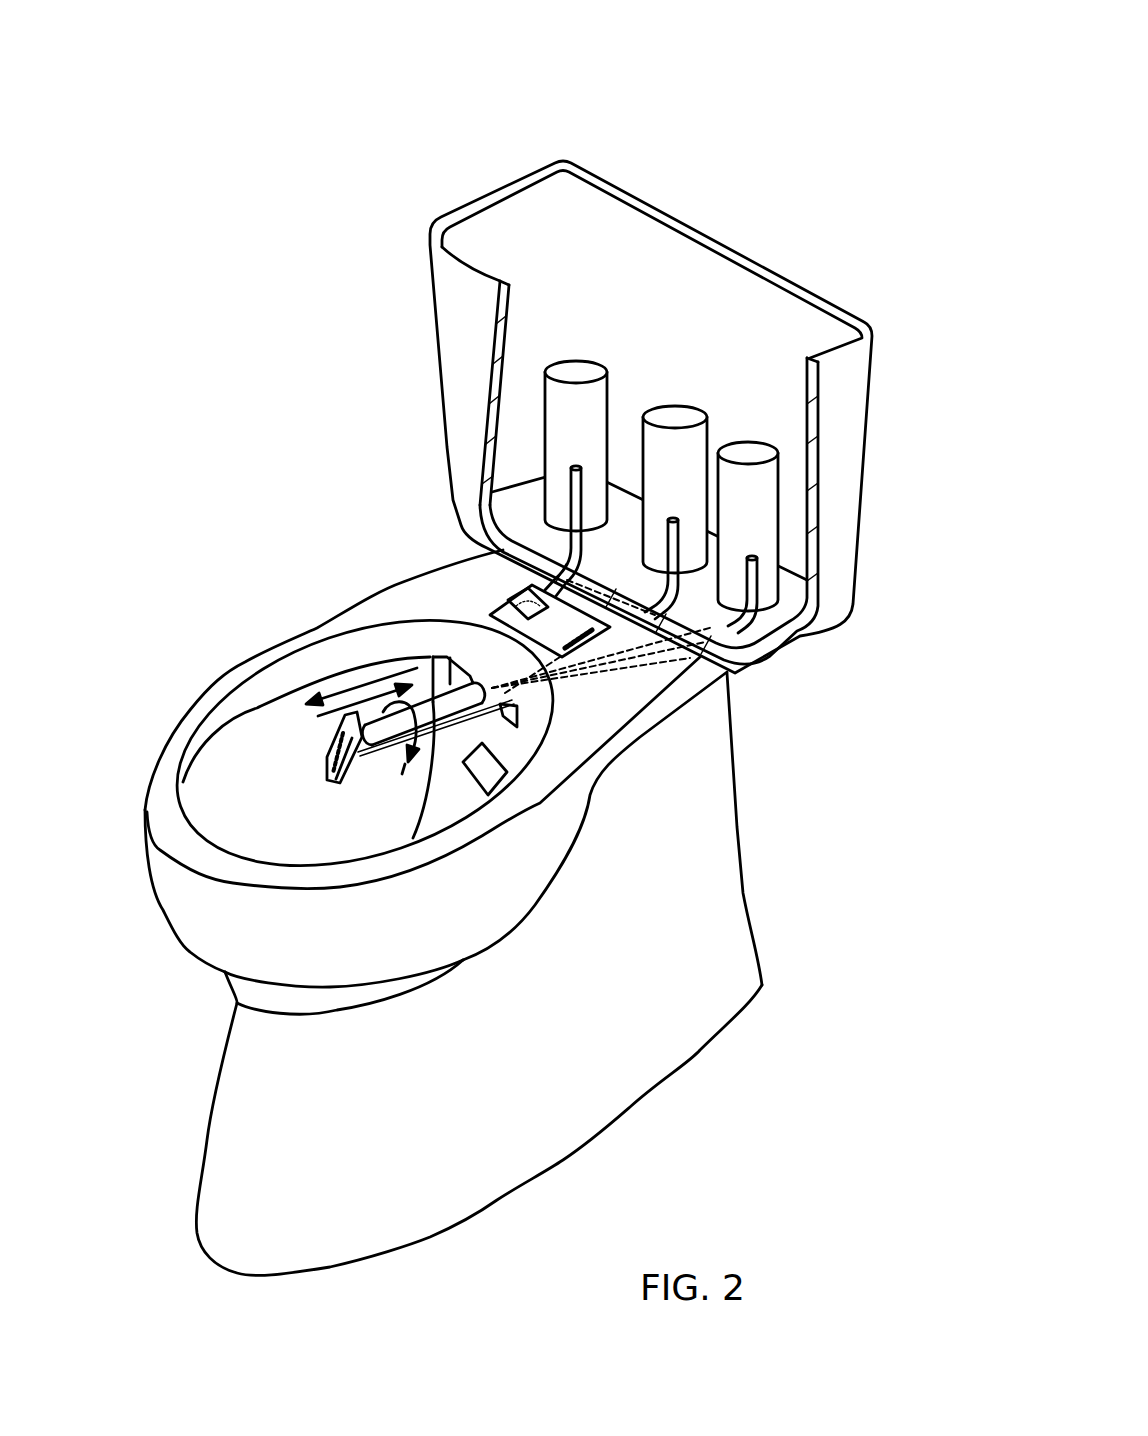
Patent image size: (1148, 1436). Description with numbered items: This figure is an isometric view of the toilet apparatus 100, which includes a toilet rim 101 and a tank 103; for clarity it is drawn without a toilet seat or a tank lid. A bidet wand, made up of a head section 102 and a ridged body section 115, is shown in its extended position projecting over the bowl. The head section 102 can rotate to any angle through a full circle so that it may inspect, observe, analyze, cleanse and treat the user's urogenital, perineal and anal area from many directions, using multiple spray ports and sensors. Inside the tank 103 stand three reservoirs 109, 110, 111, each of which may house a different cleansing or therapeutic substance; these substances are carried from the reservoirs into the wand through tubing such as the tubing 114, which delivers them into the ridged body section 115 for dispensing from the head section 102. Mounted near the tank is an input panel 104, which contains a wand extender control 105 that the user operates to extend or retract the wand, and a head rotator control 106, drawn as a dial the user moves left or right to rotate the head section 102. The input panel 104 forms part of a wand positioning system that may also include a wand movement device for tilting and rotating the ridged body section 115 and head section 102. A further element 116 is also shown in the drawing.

The toilet apparatus 100 is at (501, 638).
The toilet rim 101 is at (167, 790).
The head section 102 is at (356, 782).
The tank 103 is at (465, 338).
The input panel 104 is at (505, 612).
The wand extender control 105 is at (667, 690).
The head rotator control 106 is at (528, 585).
The reservoir 109 is at (578, 372).
The reservoir 110 is at (683, 417).
The reservoir 111 is at (752, 450).
The tubing 114 is at (783, 610).
The ridged body section 115 is at (433, 695).
The brush holder plate 116 is at (497, 780).